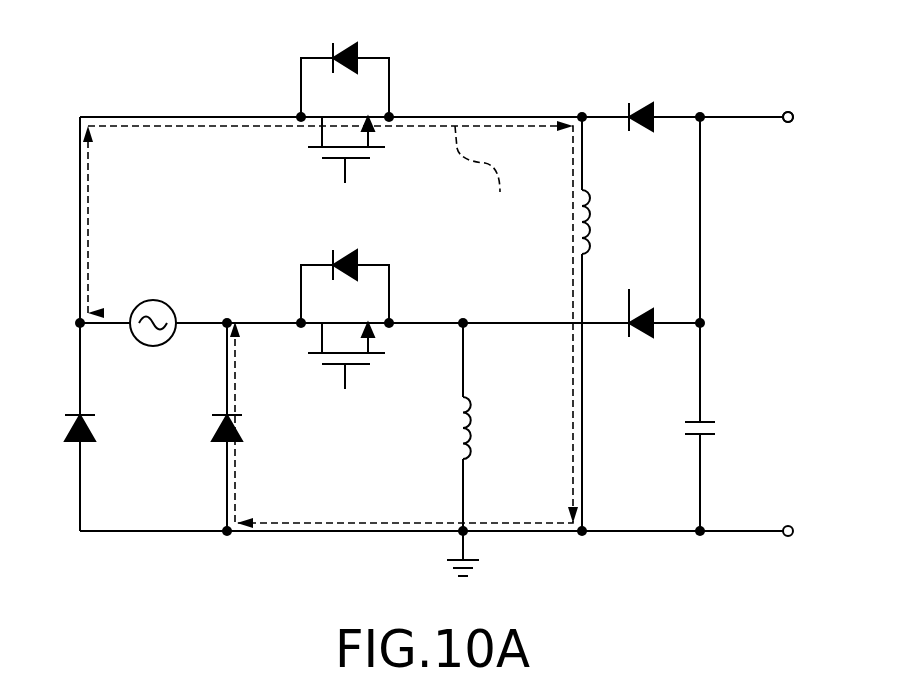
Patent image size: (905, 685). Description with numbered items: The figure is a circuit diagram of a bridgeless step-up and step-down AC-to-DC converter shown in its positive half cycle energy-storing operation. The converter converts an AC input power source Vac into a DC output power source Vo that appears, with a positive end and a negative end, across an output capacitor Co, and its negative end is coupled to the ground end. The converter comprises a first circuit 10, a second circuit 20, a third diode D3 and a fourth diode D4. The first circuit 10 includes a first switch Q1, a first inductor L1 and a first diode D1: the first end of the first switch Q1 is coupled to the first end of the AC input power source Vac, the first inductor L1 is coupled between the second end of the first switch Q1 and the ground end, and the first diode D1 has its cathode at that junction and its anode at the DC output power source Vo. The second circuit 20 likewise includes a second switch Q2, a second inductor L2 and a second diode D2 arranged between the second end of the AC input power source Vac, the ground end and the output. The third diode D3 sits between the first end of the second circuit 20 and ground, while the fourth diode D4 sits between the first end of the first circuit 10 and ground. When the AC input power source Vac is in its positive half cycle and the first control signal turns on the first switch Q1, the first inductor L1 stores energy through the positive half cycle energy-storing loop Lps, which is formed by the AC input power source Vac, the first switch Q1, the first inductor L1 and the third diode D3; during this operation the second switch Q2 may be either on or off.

The first circuit 10 is at (449, 292).
The second circuit 20 is at (330, 324).
The first switch Q1 is at (333, 113).
The second switch Q2 is at (333, 319).
The first diode D1 is at (641, 102).
The second diode D2 is at (641, 308).
The third diode D3 is at (248, 430).
The fourth diode D4 is at (100, 430).
The first inductor L1 is at (567, 222).
The second inductor L2 is at (449, 428).
The output capacitor Co is at (720, 431).
The DC output power source Vo is at (808, 114).
The AC input power source Vac is at (153, 307).
The positive half cycle energy-storing loop Lps is at (487, 174).